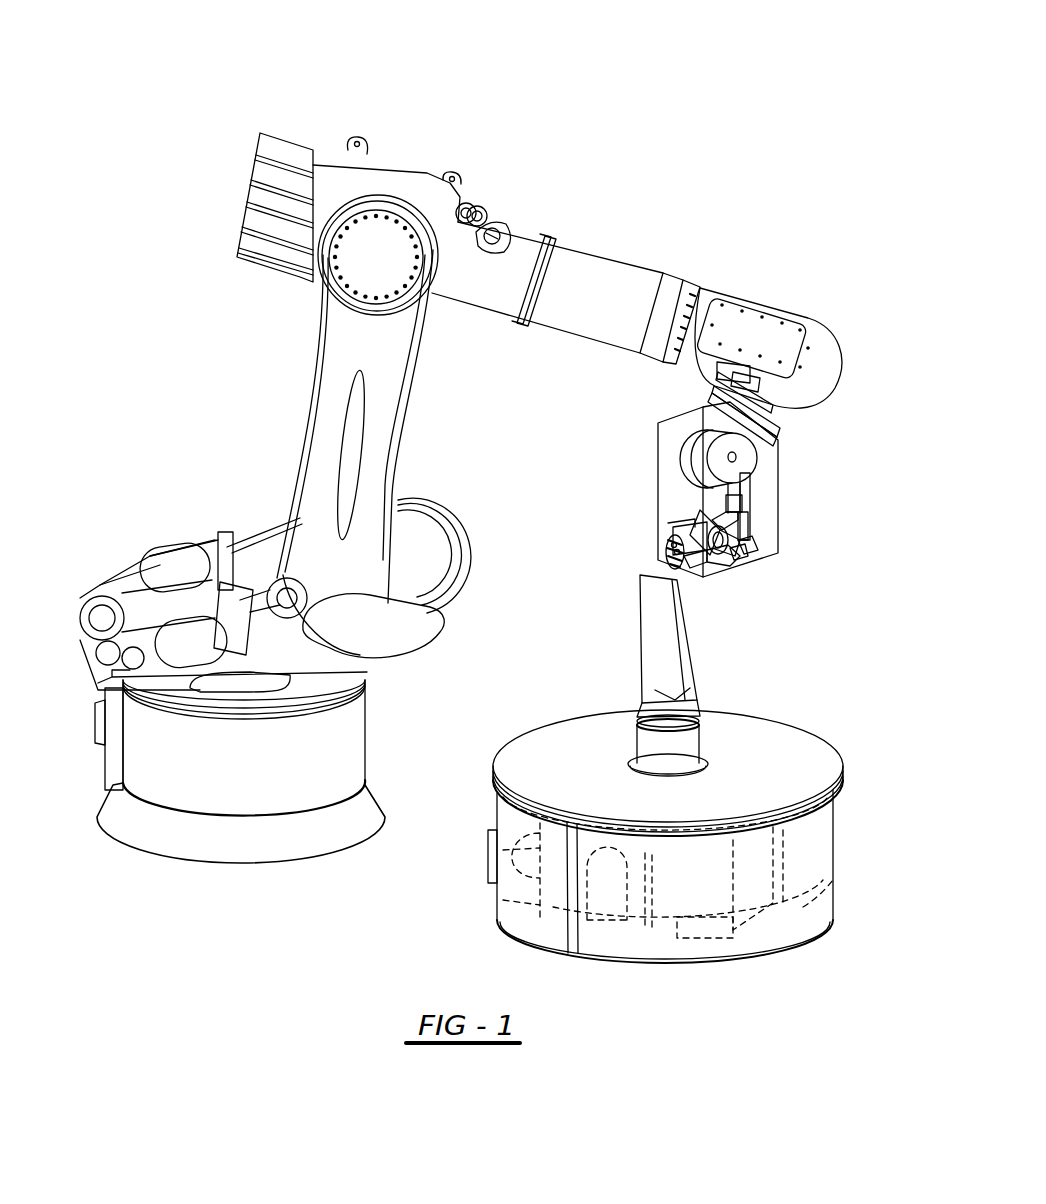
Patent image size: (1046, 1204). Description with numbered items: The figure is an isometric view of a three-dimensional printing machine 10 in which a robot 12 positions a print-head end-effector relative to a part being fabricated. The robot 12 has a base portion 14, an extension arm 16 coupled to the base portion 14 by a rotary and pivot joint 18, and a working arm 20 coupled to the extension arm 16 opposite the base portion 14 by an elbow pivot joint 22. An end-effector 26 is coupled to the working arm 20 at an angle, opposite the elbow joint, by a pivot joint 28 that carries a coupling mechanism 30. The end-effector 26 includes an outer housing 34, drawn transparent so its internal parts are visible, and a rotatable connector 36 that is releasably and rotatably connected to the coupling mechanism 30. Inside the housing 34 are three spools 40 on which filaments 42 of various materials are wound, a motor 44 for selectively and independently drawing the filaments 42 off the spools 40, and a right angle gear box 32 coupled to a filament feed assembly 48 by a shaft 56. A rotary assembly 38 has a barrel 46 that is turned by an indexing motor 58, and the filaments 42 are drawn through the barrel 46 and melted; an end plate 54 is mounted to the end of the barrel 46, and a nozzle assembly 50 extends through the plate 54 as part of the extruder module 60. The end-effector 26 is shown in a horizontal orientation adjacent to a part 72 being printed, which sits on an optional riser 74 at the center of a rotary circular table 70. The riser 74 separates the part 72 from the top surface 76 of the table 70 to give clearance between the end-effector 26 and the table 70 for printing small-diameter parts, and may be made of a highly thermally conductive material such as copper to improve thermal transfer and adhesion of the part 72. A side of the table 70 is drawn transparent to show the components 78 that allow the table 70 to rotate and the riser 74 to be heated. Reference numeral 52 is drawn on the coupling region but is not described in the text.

The 3D printing machine 10 is at (646, 80).
The robot 12 is at (263, 407).
The base portion 14 is at (332, 727).
The extension arm 16 is at (378, 420).
The rotary and pivot joint 18 is at (390, 623).
The working arm 20 is at (592, 275).
The elbow pivot joint 22 is at (387, 250).
The end-effector 26 is at (788, 498).
The pivot joint 28 is at (828, 372).
The coupling mechanism 30 is at (718, 368).
The right angle gear box 32 is at (733, 537).
The outer housing 34 is at (665, 487).
The rotatable connector 36 is at (772, 440).
The rotary assembly 38 is at (737, 568).
The spools 40 is at (748, 460).
The filaments 42 is at (738, 528).
The motor 44 is at (735, 497).
The barrel 46 is at (727, 562).
The filament feed assembly 48 is at (740, 550).
The nozzle assembly 50 is at (656, 549).
The coupling 52 is at (722, 415).
The end plate 54 is at (690, 572).
The shaft 56 is at (740, 540).
The indexing motor 58 is at (700, 527).
The extruder module 60 is at (770, 492).
The rotary circular table 70 is at (838, 848).
The part 72 is at (658, 613).
The riser 74 is at (647, 743).
The top surface 76 is at (533, 760).
The components 78 is at (532, 880).